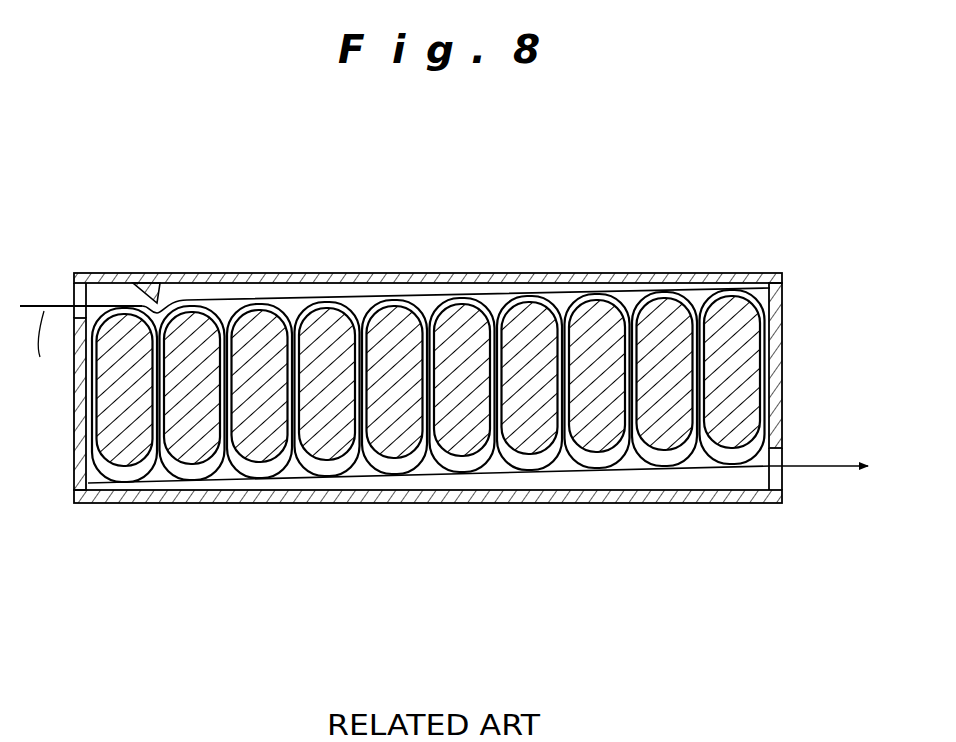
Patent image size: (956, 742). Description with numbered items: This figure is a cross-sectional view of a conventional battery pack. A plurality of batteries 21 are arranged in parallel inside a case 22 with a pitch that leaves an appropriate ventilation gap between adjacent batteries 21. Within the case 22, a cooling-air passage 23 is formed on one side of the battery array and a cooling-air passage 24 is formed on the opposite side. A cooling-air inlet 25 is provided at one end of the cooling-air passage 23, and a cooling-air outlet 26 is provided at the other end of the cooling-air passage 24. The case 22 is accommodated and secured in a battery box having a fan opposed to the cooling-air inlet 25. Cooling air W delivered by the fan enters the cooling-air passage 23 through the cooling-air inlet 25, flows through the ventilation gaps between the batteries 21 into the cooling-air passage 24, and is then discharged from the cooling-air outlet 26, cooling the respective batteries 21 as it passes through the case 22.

The batteries 21 is at (128, 448).
The case 22 is at (792, 278).
The cooling-air passage 23 is at (232, 298).
The cooling-air passage 24 is at (690, 480).
The cooling-air inlet 25 is at (74, 297).
The cooling-air outlet 26 is at (790, 450).
The cooling air W is at (41, 354).